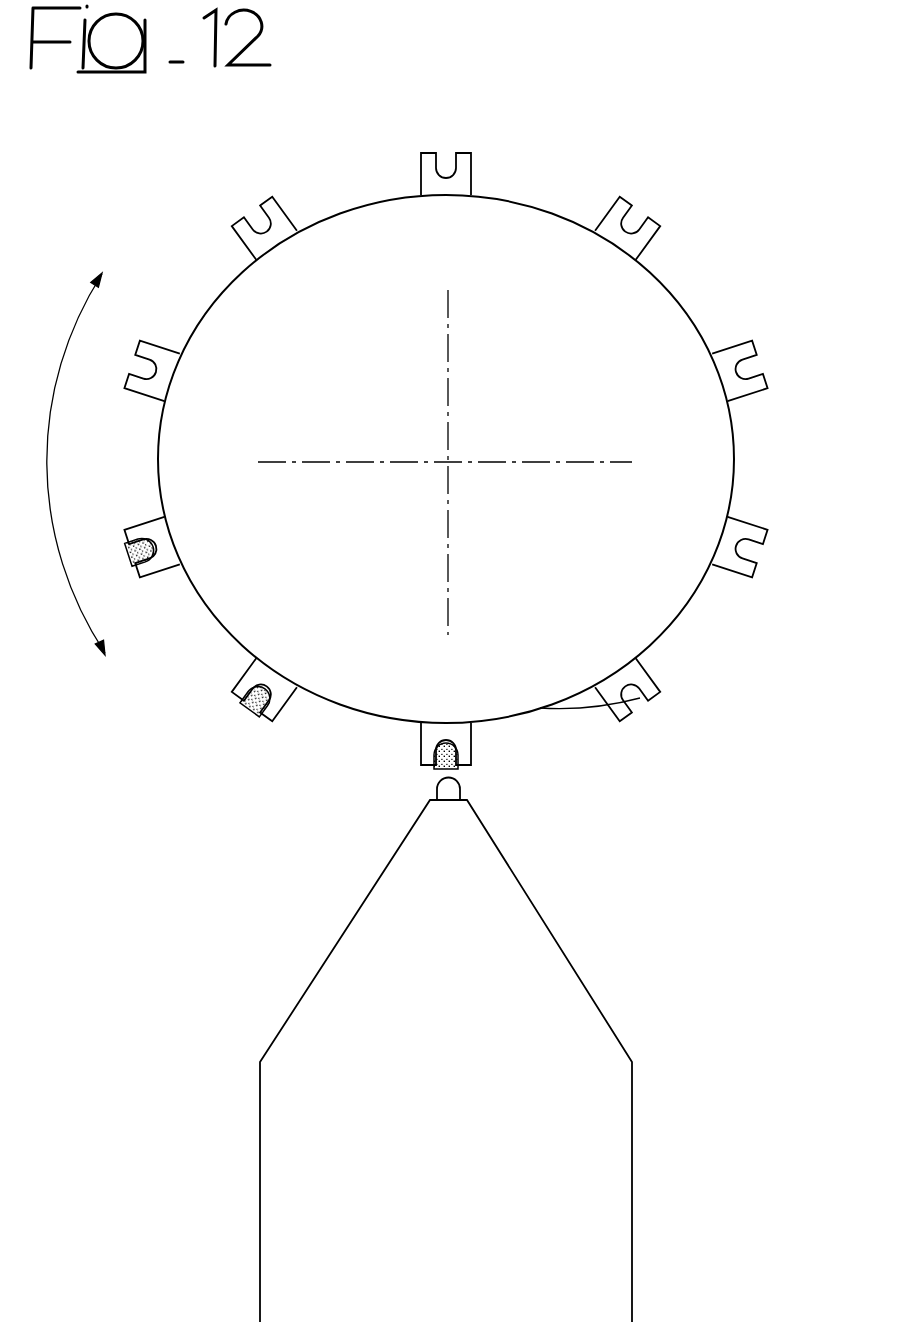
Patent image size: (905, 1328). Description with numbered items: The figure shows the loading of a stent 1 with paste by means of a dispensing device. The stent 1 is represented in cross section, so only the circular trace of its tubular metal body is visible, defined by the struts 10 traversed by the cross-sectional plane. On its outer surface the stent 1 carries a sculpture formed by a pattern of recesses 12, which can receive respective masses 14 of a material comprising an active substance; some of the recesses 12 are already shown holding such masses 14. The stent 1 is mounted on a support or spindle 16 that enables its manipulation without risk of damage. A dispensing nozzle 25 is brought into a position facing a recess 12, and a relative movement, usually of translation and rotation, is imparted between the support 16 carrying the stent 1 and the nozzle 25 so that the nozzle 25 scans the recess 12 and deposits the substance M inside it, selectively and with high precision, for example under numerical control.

The stent 1 is at (724, 624).
The struts 10 is at (284, 237).
The recesses 12 is at (768, 367).
The masses of material 14 is at (436, 766).
The support or spindle 16 is at (567, 675).
The dispensing nozzle 25 is at (603, 1105).
The substance M is at (457, 791).